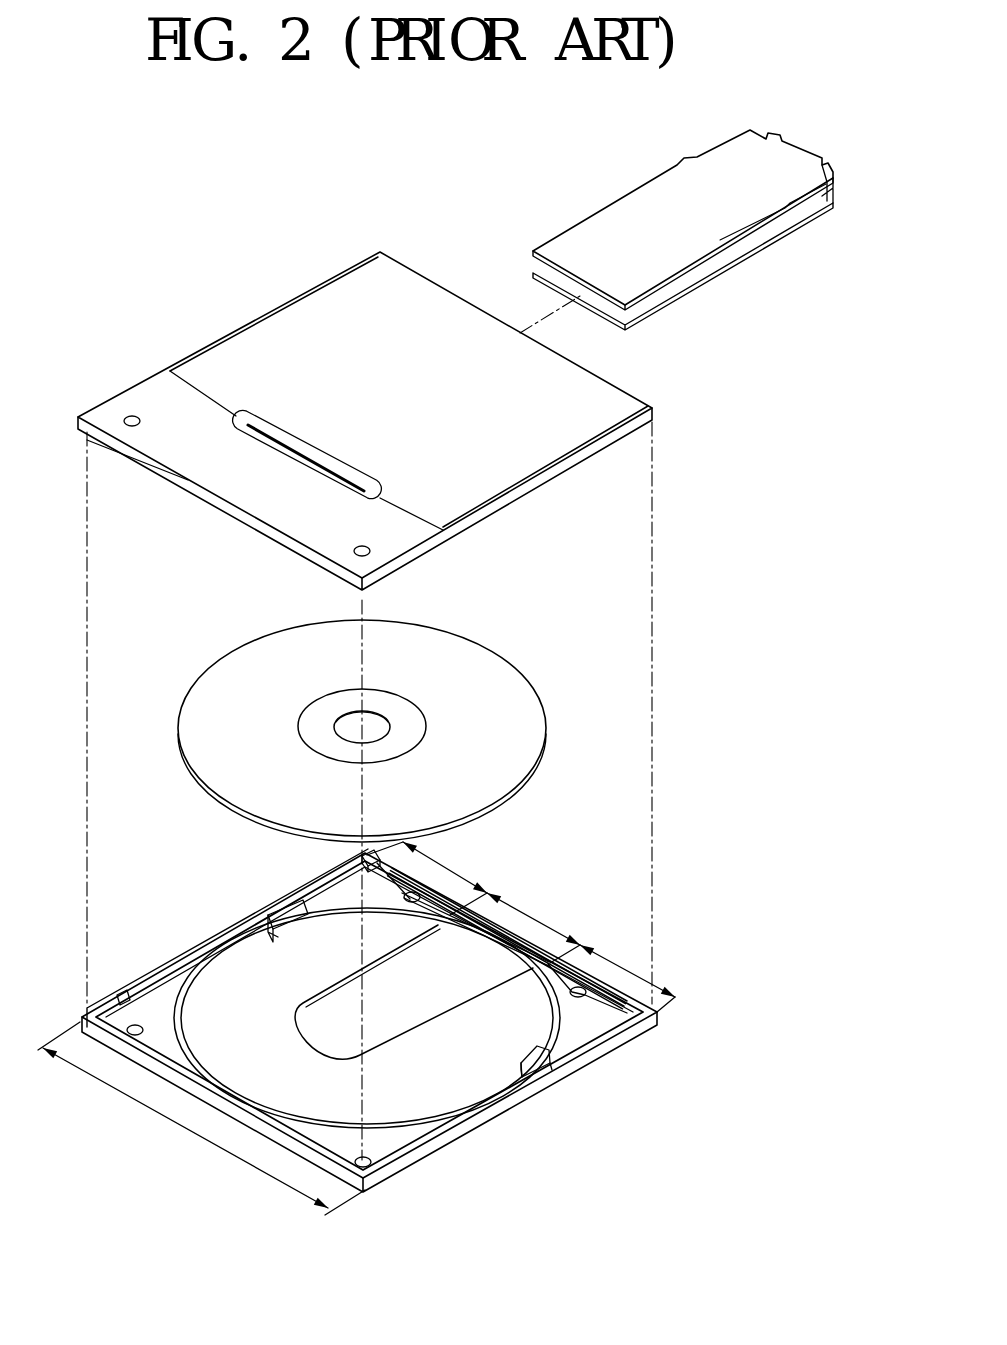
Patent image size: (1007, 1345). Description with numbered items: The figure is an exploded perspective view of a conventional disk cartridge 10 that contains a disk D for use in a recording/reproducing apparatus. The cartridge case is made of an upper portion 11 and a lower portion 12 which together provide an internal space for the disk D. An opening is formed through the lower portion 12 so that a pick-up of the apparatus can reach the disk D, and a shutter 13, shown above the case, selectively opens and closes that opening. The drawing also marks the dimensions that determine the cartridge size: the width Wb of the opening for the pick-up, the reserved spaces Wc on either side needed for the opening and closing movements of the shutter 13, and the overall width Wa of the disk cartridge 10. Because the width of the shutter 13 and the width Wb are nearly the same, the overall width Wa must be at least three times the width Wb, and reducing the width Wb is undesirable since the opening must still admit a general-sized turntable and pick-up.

The disk cartridge 10 is at (121, 366).
The upper portion 11 is at (543, 487).
The lower portion 12 is at (560, 1073).
The shutter 13 is at (642, 205).
The disk D is at (215, 685).
The overall width Wa is at (201, 1118).
The width of the opening Wb is at (533, 918).
The reserved spaces Wc is at (521, 927).